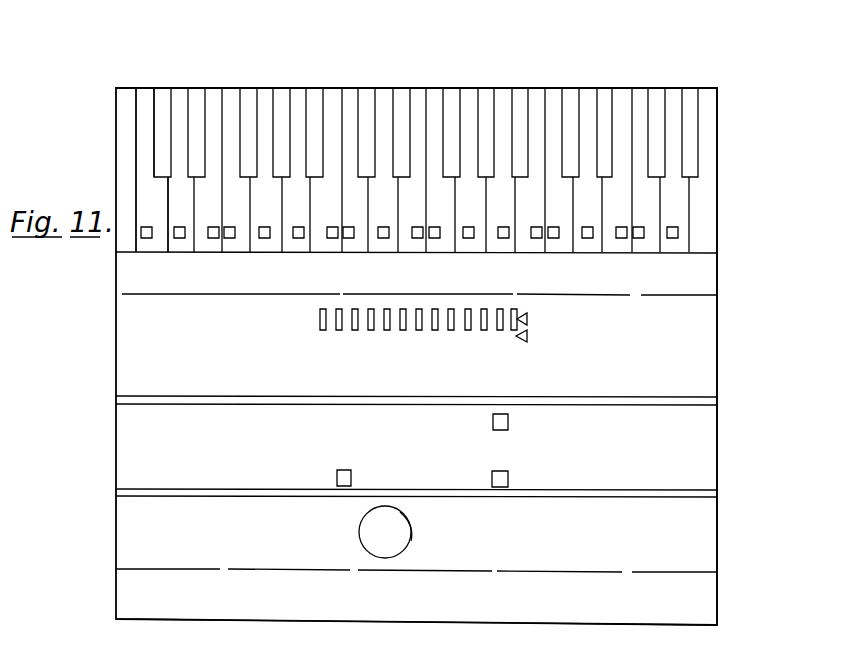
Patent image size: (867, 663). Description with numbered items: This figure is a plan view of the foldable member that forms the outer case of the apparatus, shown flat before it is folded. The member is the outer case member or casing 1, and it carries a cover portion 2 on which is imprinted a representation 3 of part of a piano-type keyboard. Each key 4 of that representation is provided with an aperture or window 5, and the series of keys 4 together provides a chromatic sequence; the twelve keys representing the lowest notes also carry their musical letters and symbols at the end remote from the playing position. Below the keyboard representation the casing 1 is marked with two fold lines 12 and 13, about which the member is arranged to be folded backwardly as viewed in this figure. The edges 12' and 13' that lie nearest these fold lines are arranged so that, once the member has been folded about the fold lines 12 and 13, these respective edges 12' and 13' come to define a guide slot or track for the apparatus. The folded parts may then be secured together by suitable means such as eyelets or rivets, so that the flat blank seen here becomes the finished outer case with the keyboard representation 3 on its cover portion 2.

The outer case member 1 is at (113, 428).
The cover portion 2 is at (225, 263).
The representation of part of the piano-type keyboard 3 is at (721, 188).
The key 4 is at (146, 119).
The aperture or window 5 is at (179, 239).
The fold line 12 is at (416, 555).
The edge 12' is at (416, 640).
The fold line 13 is at (419, 311).
The edge 13' is at (416, 68).